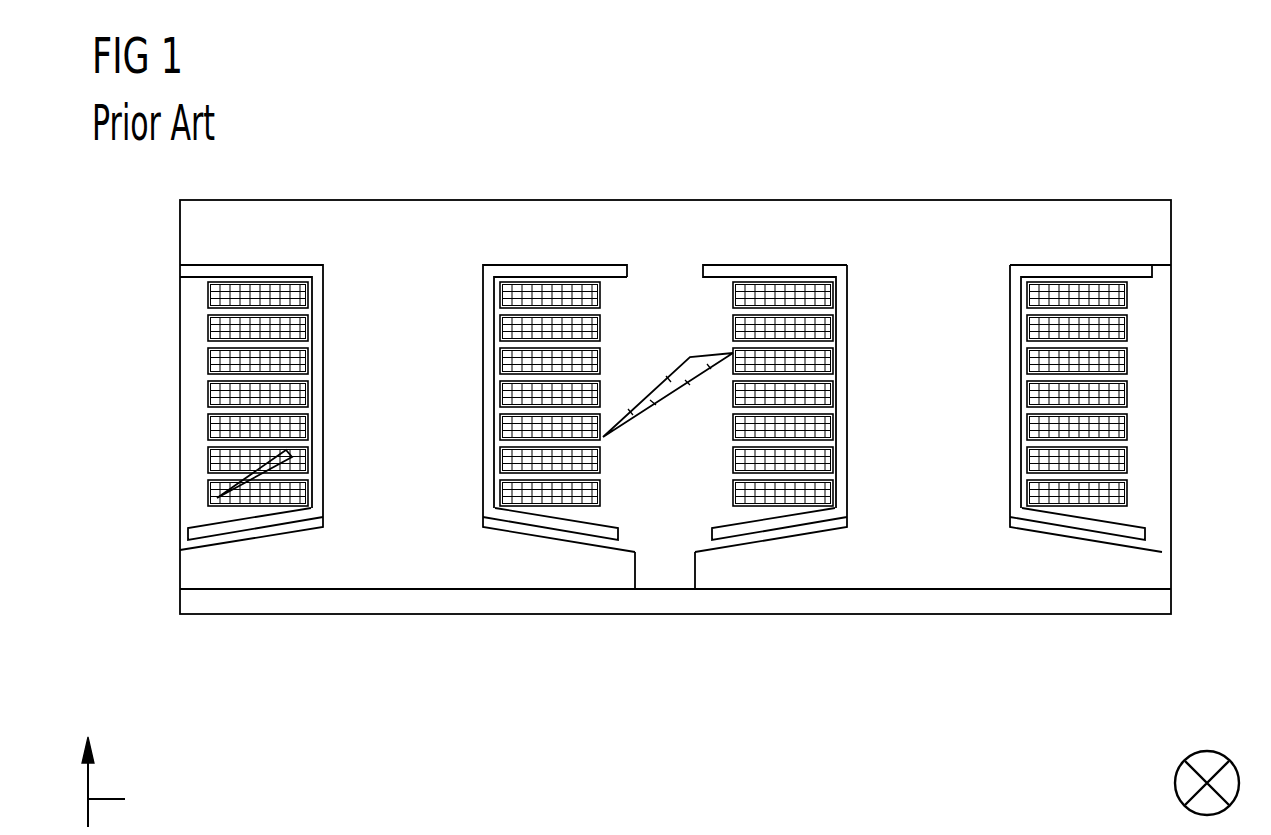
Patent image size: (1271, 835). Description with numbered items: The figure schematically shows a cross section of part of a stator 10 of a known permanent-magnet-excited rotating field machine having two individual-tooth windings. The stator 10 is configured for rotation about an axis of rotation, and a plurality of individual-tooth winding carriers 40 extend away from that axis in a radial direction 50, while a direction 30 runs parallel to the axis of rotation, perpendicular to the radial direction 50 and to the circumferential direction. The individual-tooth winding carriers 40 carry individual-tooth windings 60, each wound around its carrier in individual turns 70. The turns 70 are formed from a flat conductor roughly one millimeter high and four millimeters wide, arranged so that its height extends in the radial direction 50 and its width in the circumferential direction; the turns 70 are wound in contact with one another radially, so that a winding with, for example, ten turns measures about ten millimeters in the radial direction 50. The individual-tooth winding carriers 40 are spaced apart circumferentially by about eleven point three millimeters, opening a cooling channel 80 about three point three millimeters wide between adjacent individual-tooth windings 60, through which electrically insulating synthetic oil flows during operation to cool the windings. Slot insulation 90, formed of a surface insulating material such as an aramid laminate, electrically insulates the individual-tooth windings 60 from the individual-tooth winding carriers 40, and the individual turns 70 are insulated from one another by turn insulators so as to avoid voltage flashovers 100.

The stator 10 is at (358, 600).
The direction parallel to the axis of rotation 30 is at (1175, 783).
The individual-tooth winding carrier 40 is at (425, 508).
The radial direction 50 is at (121, 782).
The individual-tooth winding 60 is at (1085, 487).
The turns 70 is at (602, 325).
The cooling channel 80 is at (675, 457).
The slot insulation 90 is at (478, 300).
The voltage flashovers 100 is at (682, 360).